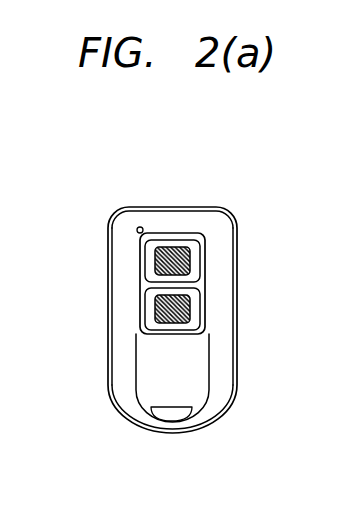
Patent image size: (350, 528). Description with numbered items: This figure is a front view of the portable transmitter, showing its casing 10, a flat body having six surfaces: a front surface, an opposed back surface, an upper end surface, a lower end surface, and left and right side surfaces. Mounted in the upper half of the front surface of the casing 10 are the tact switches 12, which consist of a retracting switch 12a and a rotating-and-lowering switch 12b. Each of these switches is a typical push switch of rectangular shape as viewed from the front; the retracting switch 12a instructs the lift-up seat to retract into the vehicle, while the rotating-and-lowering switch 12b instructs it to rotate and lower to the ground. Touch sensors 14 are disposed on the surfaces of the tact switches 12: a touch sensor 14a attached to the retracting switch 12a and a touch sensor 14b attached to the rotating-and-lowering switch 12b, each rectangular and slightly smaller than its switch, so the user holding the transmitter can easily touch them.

The casing 10 is at (227, 211).
The tact switches 12 is at (103, 275).
The retracting switch 12a is at (155, 260).
The rotating-and-lowering switch 12b is at (155, 306).
The touch sensors 14 is at (240, 283).
The touch sensor 14a is at (190, 260).
The touch sensor 14b is at (190, 306).